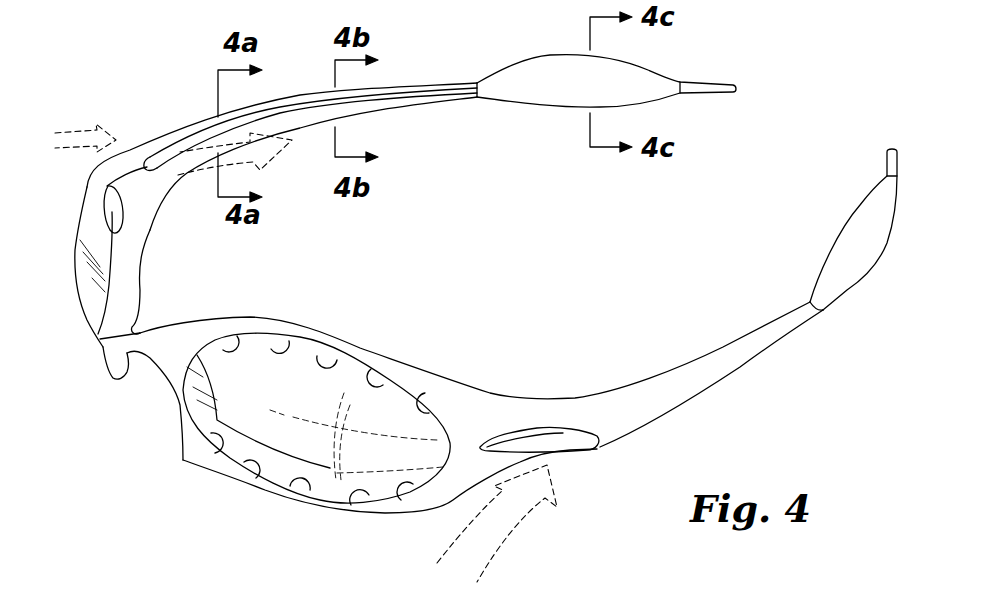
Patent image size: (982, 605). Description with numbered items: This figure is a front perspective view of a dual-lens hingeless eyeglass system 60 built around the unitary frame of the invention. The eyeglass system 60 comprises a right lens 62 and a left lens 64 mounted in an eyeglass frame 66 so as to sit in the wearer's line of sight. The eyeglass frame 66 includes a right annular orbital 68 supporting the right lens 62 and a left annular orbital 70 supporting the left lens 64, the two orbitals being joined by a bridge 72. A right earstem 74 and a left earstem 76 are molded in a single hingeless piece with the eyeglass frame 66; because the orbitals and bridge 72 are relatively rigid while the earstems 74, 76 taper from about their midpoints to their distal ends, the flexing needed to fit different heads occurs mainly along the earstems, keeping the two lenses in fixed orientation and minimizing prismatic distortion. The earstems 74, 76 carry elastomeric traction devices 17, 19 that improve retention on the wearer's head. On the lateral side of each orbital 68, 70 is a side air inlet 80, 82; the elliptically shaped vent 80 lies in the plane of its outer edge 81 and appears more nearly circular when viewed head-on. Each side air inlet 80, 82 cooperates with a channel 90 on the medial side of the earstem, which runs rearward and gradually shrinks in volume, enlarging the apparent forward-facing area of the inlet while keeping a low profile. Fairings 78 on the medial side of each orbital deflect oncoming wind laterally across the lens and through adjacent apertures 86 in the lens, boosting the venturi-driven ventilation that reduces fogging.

The elastomeric traction device 17 is at (870, 267).
The elastomeric traction device 19 is at (546, 98).
The dual-lens hingeless eyeglass system 60 is at (88, 377).
The right lens 62 is at (80, 268).
The left lens 64 is at (288, 472).
The eyeglass frame 66 is at (475, 383).
The right annular orbital 68 is at (135, 243).
The left annular orbital 70 is at (362, 348).
The bridge 72 is at (100, 339).
The right earstem 74 is at (296, 100).
The left earstem 76 is at (733, 370).
The fairing 78 is at (109, 380).
The side air inlet 80 is at (577, 448).
The outer edge of the vent 81 is at (540, 428).
The side air inlet 82 is at (160, 153).
The aperture 86 is at (360, 500).
The channel 90 is at (207, 137).